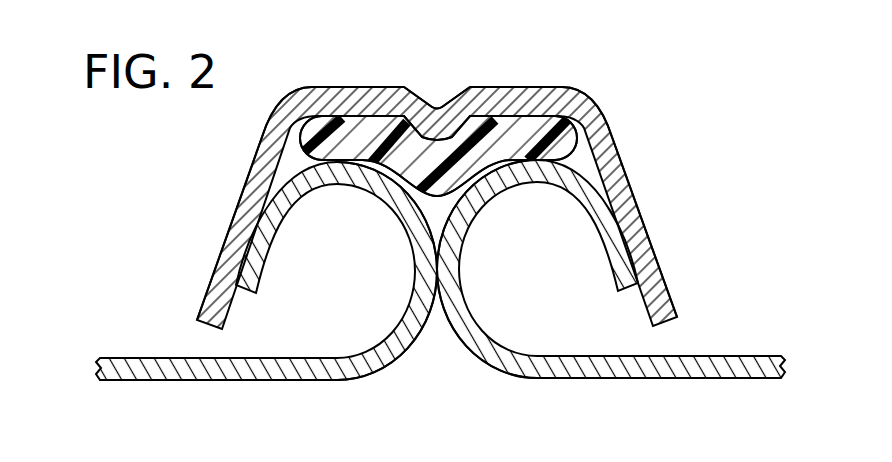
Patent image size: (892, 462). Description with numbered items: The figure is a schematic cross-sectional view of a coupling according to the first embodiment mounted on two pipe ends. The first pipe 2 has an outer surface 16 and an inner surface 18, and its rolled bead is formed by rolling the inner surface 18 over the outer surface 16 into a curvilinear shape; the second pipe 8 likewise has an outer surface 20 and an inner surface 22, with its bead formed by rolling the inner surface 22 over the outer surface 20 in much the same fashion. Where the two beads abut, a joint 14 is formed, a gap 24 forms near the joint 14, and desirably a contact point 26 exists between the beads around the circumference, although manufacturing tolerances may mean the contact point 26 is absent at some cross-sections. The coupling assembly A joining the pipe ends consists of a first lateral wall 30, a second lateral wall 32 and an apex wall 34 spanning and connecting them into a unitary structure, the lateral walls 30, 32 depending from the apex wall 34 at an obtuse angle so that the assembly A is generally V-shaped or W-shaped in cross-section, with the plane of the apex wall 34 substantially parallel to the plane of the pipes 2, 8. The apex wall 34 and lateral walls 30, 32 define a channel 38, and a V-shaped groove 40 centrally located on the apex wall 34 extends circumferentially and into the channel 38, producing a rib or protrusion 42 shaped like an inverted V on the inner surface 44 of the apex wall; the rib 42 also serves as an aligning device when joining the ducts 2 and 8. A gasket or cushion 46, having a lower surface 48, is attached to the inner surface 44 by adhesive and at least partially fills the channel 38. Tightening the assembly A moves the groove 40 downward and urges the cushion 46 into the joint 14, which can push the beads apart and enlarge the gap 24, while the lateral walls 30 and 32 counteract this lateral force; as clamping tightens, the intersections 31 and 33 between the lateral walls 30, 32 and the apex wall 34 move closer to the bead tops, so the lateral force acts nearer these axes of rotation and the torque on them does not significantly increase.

The first pipe 2 is at (108, 361).
The second pipe 8 is at (735, 356).
The joint 14 is at (436, 340).
The outer surface 16 is at (207, 361).
The inner surface 18 is at (260, 381).
The outer surface 20 is at (583, 355).
The inner surface 22 is at (503, 375).
The gap 24 is at (435, 217).
The contact point 26 is at (438, 268).
The first lateral wall 30 is at (242, 195).
The intersection 31 is at (285, 100).
The second lateral wall 32 is at (638, 204).
The intersection 33 is at (575, 98).
The apex wall 34 is at (344, 95).
The channel 38 is at (293, 152).
The groove 40 is at (436, 103).
The rib or protrusion 42 is at (445, 133).
The inner surface 44 is at (369, 117).
The gasket or cushion 46 is at (563, 143).
The lower surface 48 is at (400, 165).
The coupling assembly A is at (613, 113).